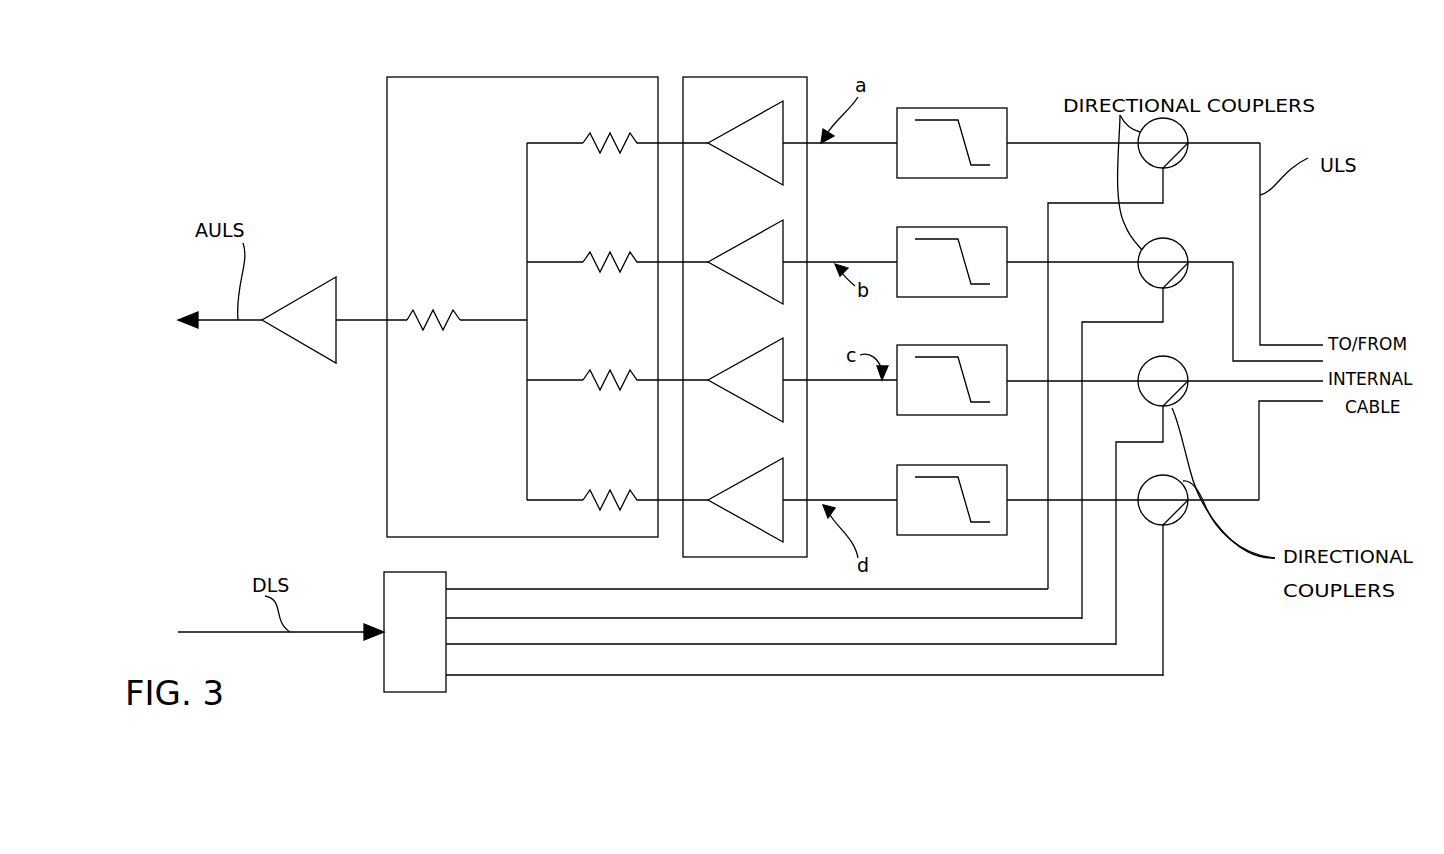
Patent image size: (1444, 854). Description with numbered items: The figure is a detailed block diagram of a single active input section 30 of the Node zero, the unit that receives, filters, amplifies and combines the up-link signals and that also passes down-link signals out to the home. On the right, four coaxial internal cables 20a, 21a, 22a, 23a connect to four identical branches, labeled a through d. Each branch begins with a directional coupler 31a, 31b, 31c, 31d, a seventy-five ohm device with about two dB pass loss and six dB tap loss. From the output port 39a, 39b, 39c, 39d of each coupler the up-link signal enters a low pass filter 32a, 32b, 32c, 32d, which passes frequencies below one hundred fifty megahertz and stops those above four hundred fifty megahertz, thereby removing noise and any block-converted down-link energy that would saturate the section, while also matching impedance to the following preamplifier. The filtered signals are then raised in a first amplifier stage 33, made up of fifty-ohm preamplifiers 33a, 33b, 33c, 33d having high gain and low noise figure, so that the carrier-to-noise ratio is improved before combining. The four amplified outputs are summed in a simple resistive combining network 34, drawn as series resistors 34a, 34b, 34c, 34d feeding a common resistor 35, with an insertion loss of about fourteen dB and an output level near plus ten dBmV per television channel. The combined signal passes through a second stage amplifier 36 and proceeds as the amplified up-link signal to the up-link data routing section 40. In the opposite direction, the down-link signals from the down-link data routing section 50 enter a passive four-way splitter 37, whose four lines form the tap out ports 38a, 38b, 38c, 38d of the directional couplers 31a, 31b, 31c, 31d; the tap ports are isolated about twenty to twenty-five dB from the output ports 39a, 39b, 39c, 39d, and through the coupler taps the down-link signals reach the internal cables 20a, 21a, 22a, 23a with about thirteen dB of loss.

The input section 30 is at (1265, 644).
The directional coupler 31a is at (1183, 160).
The directional coupler 31b is at (1183, 283).
The directional coupler 31c is at (1183, 400).
The directional coupler 31d is at (1185, 520).
The low pass filter 32a is at (905, 108).
The low pass filter 32b is at (897, 246).
The low pass filter 32c is at (897, 350).
The low pass filter 32d is at (897, 485).
The first amplifier stage 33 is at (707, 77).
The preamplifier 33a is at (730, 131).
The preamplifier 33b is at (743, 246).
The preamplifier 33c is at (740, 362).
The preamplifier 33d is at (742, 485).
The resistive combining network 34 is at (425, 77).
The resistor 34a is at (587, 140).
The resistor 34b is at (587, 259).
The resistor 34c is at (587, 377).
The resistor 34d is at (587, 497).
The resistor R-1 35 is at (418, 330).
The second stage amplifier 36 is at (280, 306).
The passive 4-way splitter 37 is at (407, 572).
The tap out port 38a is at (515, 589).
The tap out port 38b is at (655, 618).
The tap out port 38c is at (722, 644).
The tap out port 38d is at (720, 675).
The output port 39a is at (1035, 146).
The output port 39b is at (1068, 265).
The output port 39c is at (1104, 383).
The output port 39d is at (1125, 502).
The internal cable 20a is at (1280, 345).
The internal cable 21a is at (1300, 361).
The internal cable 22a is at (1287, 381).
The internal cable 23a is at (1310, 401).
The up-link data routing section 40 is at (157, 386).
The down-link data routing section 50 is at (233, 581).